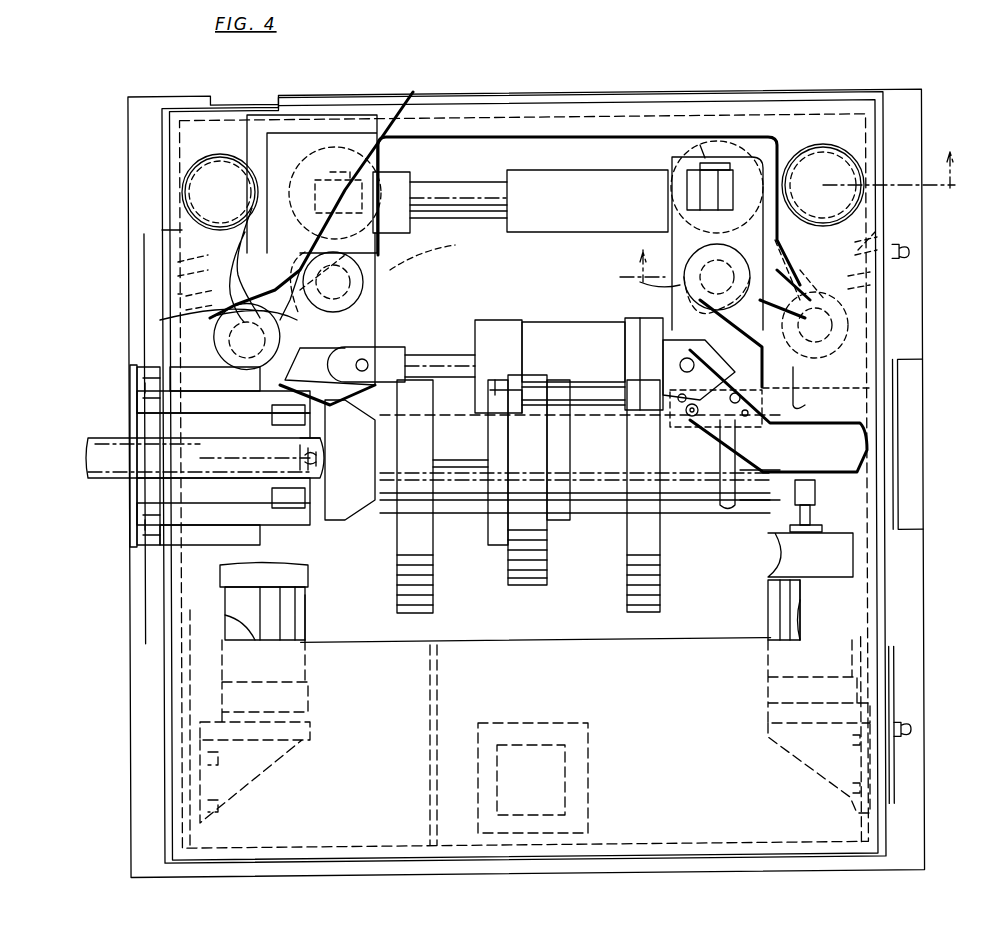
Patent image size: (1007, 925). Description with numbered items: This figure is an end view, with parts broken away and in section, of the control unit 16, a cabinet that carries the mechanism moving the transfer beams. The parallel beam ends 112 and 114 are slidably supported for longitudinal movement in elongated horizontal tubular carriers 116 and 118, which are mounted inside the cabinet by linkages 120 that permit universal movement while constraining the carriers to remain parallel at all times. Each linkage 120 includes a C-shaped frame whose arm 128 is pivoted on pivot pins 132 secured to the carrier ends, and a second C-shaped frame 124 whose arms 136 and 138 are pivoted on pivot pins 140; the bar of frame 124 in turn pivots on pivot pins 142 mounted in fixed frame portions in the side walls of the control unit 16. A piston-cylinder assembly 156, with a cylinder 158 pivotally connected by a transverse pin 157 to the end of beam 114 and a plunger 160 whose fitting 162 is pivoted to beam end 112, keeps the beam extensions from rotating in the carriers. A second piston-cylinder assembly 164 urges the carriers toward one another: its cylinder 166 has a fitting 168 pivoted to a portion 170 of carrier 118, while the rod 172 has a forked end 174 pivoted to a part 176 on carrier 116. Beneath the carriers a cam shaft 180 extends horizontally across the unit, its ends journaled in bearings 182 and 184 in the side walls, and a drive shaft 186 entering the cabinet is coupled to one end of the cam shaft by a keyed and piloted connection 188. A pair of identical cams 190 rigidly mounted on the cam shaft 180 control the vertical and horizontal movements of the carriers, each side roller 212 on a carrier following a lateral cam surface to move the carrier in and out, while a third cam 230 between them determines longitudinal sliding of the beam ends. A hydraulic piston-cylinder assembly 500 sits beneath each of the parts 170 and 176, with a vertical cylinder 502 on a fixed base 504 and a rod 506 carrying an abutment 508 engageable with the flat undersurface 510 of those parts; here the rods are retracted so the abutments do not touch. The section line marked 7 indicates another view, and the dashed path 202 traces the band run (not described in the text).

The control unit 16 is at (128, 150).
The pivot pins 142 is at (185, 196).
The section line 7 is at (792, 219).
The arm 138 is at (160, 235).
The linkage 120 is at (168, 270).
The C-shaped frame 124 is at (168, 302).
The beam end 112 is at (314, 184).
The tubular carrier 116 is at (322, 128).
The fitting 162 is at (385, 140).
The plunger 160 is at (455, 182).
The cylinder 158 is at (587, 201).
The piston-cylinder assembly 156 is at (600, 150).
The transverse pin 157 is at (705, 162).
The beam end 114 is at (740, 182).
The arm 128 is at (240, 338).
The pivot pins 132 is at (385, 240).
The pivot pins 140 is at (248, 325).
The arm 136 is at (880, 228).
The band path 202 is at (420, 262).
The side roller 212 is at (395, 282).
The forked end 174 is at (378, 350).
The rod 172 is at (442, 355).
The part 176 is at (360, 530).
The piston-cylinder assembly 164 is at (502, 312).
The cylinder 166 is at (580, 368).
The fitting 168 is at (660, 345).
The portion 170 is at (770, 386).
The drive shaft 186 is at (90, 456).
The bearing 182 is at (275, 415).
The keyed and piloted connection 188 is at (285, 458).
The cam shaft 180 is at (462, 512).
The cams 190 is at (435, 572).
The third cam 230 is at (548, 549).
The bearing 184 is at (755, 520).
The undersurface 510 is at (805, 490).
The abutment 508 is at (825, 500).
The rod 506 is at (822, 528).
The hydraulic piston-cylinder assembly 500 is at (312, 599).
The vertical cylinder 502 is at (305, 618).
The fixed base 504 is at (312, 720).
The tubular carrier 118 is at (710, 150).